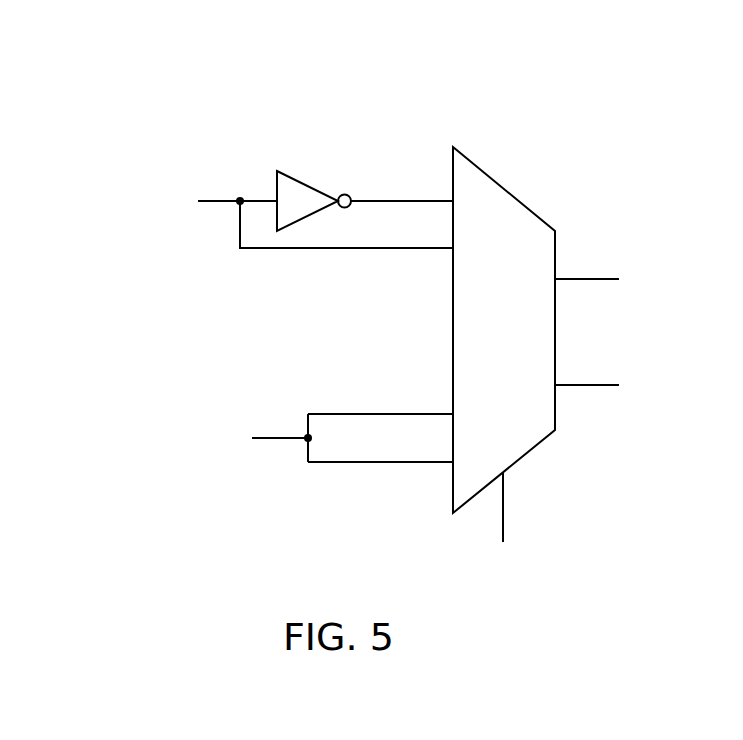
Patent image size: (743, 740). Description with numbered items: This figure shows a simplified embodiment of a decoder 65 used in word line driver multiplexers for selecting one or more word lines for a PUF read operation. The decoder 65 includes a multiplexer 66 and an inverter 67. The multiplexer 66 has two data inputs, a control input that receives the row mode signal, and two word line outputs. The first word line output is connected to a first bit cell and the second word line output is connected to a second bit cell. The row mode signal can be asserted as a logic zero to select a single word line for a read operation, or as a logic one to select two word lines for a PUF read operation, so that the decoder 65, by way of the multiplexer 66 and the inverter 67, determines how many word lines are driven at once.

The decoder 65 is at (362, 75).
The multiplexer 66 is at (504, 330).
The inverter 67 is at (292, 177).